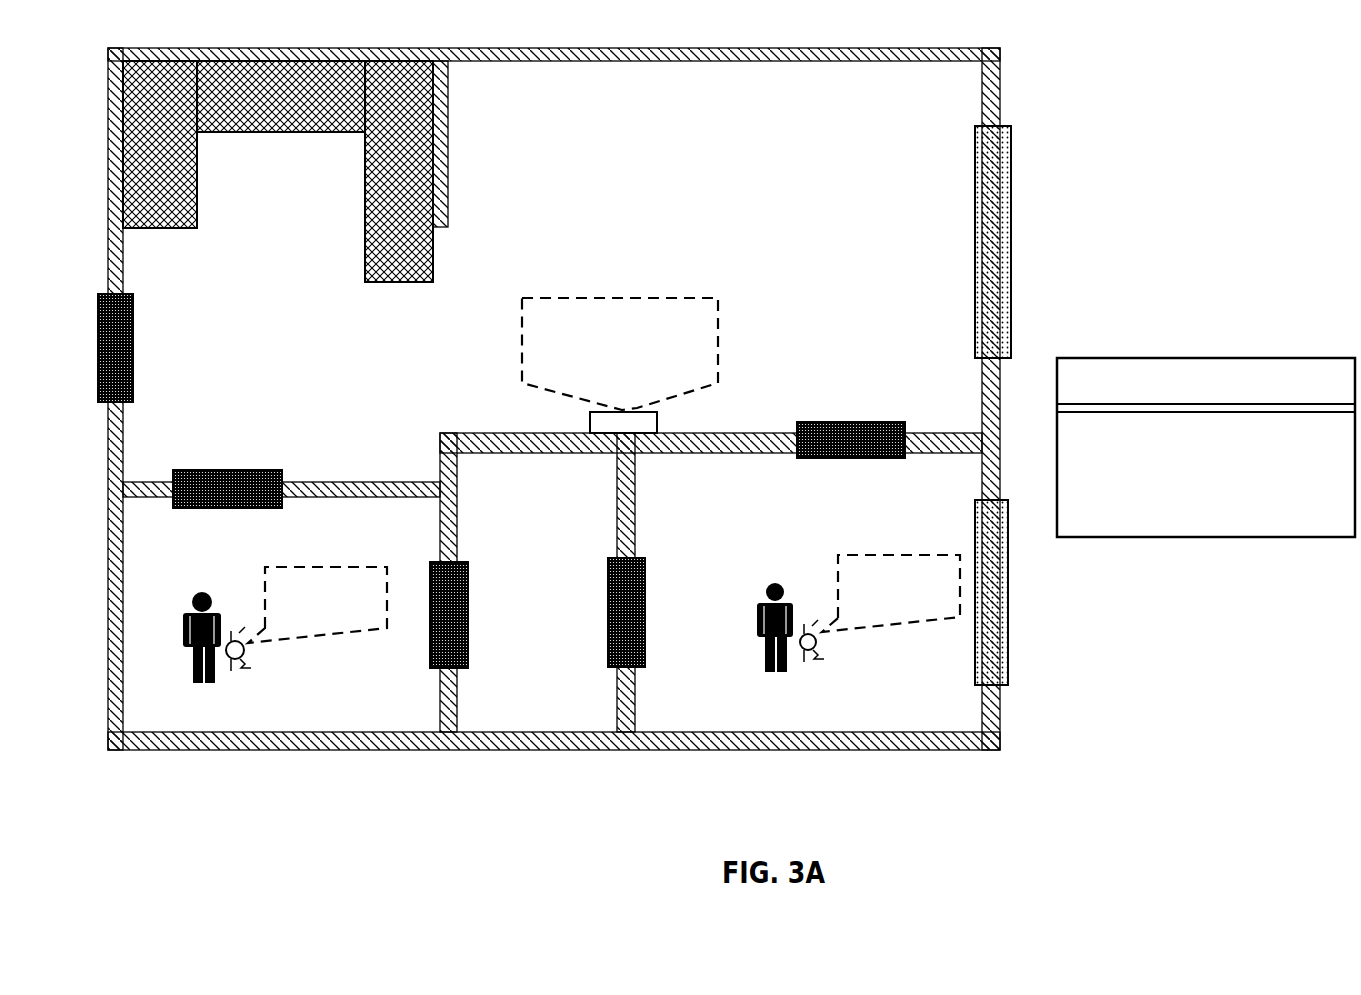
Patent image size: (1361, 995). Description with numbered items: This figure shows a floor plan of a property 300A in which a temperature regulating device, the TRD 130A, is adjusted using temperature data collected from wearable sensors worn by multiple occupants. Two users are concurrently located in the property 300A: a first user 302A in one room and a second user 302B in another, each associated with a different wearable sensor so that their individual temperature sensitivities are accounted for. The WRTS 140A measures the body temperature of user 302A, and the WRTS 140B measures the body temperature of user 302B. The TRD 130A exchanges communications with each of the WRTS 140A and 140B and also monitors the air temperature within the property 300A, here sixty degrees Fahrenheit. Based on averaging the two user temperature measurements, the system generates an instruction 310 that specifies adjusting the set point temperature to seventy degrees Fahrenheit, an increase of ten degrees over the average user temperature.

The property 300A is at (923, 48).
The TRD 130A is at (657, 423).
The user 302A is at (204, 591).
The user 302B is at (777, 583).
The WRTS 140A is at (243, 656).
The WRTS 140B is at (816, 648).
The instruction 310 is at (1195, 358).